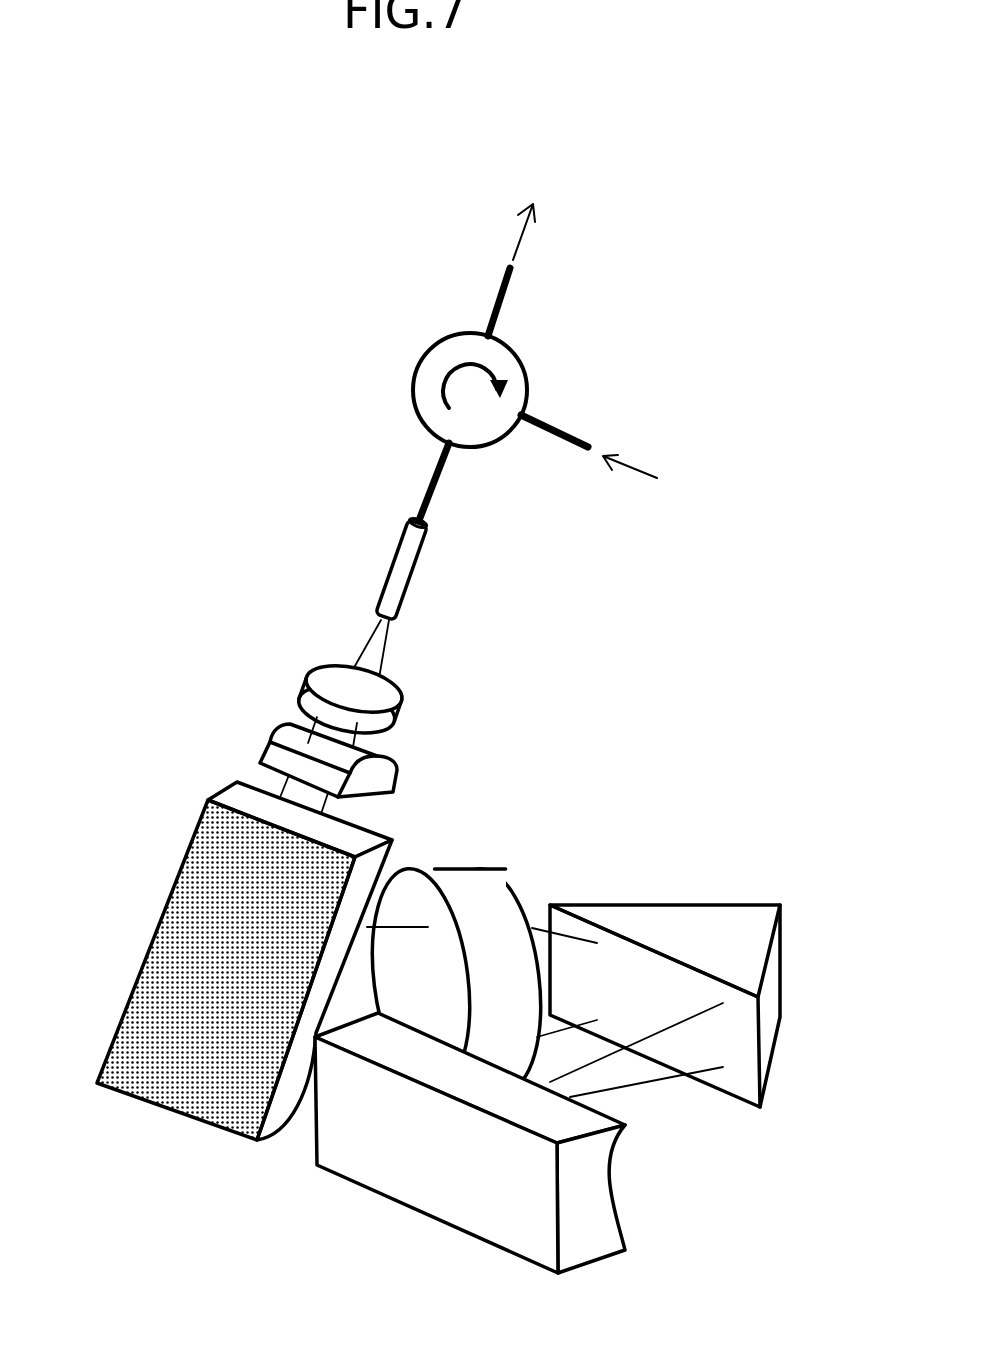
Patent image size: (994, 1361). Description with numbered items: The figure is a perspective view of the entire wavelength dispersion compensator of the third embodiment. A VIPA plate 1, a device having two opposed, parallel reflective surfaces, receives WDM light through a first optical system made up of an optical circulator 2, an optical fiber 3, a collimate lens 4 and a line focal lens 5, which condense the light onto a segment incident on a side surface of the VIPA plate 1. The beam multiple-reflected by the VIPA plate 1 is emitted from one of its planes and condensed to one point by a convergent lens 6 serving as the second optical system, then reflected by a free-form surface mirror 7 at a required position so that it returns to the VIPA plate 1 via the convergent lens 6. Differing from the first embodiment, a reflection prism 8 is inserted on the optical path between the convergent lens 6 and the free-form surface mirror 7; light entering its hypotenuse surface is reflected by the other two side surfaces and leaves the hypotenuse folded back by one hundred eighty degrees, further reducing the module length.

The VIPA plate 1 is at (183, 842).
The optical circulator 2 is at (417, 362).
The optical fiber 3 is at (393, 558).
The collimate lens 4 is at (307, 687).
The line focal lens 5 is at (267, 748).
The convergent lens 6 is at (470, 868).
The free-form surface mirror 7 is at (443, 1225).
The reflection prism 8 is at (702, 903).